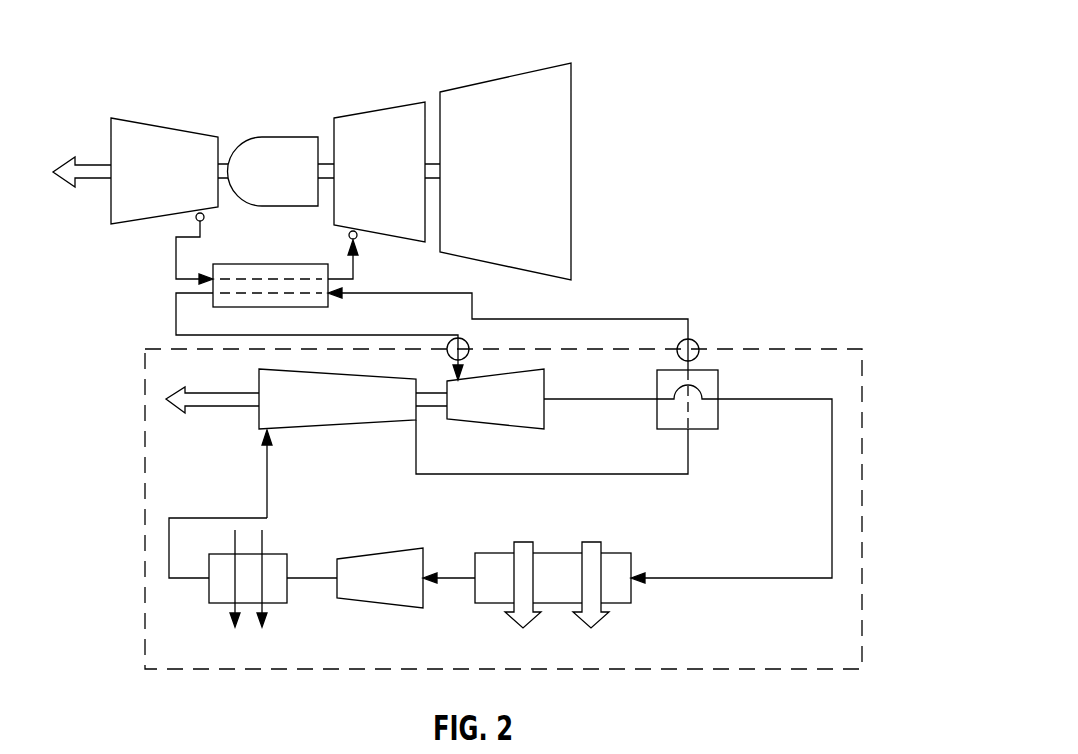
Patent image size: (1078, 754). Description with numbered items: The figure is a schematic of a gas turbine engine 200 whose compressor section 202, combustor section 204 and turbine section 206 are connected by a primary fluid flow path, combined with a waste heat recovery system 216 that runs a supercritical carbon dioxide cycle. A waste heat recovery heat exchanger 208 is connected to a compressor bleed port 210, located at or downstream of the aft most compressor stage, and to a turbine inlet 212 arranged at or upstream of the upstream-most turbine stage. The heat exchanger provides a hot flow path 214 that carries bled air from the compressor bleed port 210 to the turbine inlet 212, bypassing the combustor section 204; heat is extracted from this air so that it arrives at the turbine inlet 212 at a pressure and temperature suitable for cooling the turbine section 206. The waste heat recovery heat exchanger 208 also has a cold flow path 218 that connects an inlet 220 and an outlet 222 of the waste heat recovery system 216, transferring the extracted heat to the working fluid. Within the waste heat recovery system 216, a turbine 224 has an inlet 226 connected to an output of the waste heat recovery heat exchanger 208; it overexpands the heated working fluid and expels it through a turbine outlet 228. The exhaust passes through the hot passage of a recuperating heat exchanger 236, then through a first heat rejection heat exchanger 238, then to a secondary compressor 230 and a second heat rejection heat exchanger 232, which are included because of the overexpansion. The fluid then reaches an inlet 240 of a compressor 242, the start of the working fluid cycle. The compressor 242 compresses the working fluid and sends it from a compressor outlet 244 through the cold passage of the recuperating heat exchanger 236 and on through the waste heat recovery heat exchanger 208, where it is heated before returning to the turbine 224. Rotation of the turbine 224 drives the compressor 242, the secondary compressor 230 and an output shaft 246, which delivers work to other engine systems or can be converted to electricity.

The gas turbine engine 200 is at (688, 21).
The compressor section 202 is at (168, 125).
The combustor section 204 is at (285, 137).
The turbine section 206 is at (394, 100).
The waste heat recovery heat exchanger 208 is at (310, 264).
The compressor bleed port 210 is at (200, 212).
The turbine inlet 212 is at (358, 240).
The hot flow path 214 is at (232, 283).
The waste heat recovery system 216 is at (863, 500).
The cold flow path 218 is at (232, 290).
The inlet of the waste heat recovery system 220 is at (459, 337).
The outlet of the waste heat recovery system 222 is at (697, 342).
The turbine 224 is at (505, 428).
The inlet of the turbine 226 is at (447, 383).
The turbine outlet 228 is at (546, 400).
The secondary compressor 230 is at (378, 598).
The second heat rejection heat exchanger 232 is at (222, 604).
The recuperating heat exchanger 236 is at (700, 430).
The first heat rejection heat exchanger 238 is at (633, 562).
The inlet of the compressor 240 is at (257, 432).
The compressor 242 is at (293, 430).
The compressor outlet 244 is at (415, 422).
The output shaft 246 is at (230, 392).